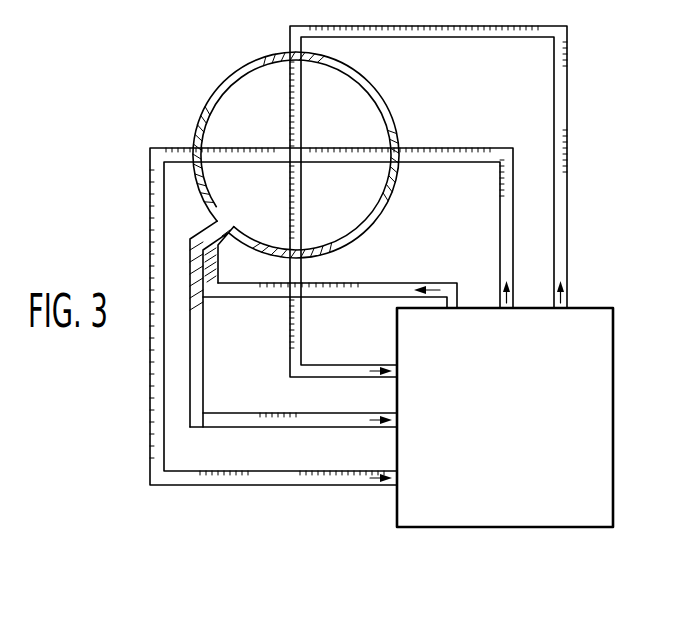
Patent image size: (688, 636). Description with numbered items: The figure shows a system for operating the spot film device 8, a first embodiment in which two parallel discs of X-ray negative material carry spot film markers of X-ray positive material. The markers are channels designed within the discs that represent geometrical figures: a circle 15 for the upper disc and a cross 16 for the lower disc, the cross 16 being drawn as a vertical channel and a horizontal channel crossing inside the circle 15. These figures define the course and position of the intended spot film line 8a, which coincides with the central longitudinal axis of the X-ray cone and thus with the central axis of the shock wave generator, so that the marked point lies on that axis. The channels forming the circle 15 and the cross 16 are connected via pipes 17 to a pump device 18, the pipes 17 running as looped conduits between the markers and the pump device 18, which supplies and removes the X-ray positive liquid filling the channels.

The spot film device 8 is at (245, 232).
The spot film line 8a is at (288, 142).
The circle 15 is at (224, 84).
The cross 16 is at (300, 97).
The pipes 17 is at (553, 232).
The pump device 18 is at (397, 494).